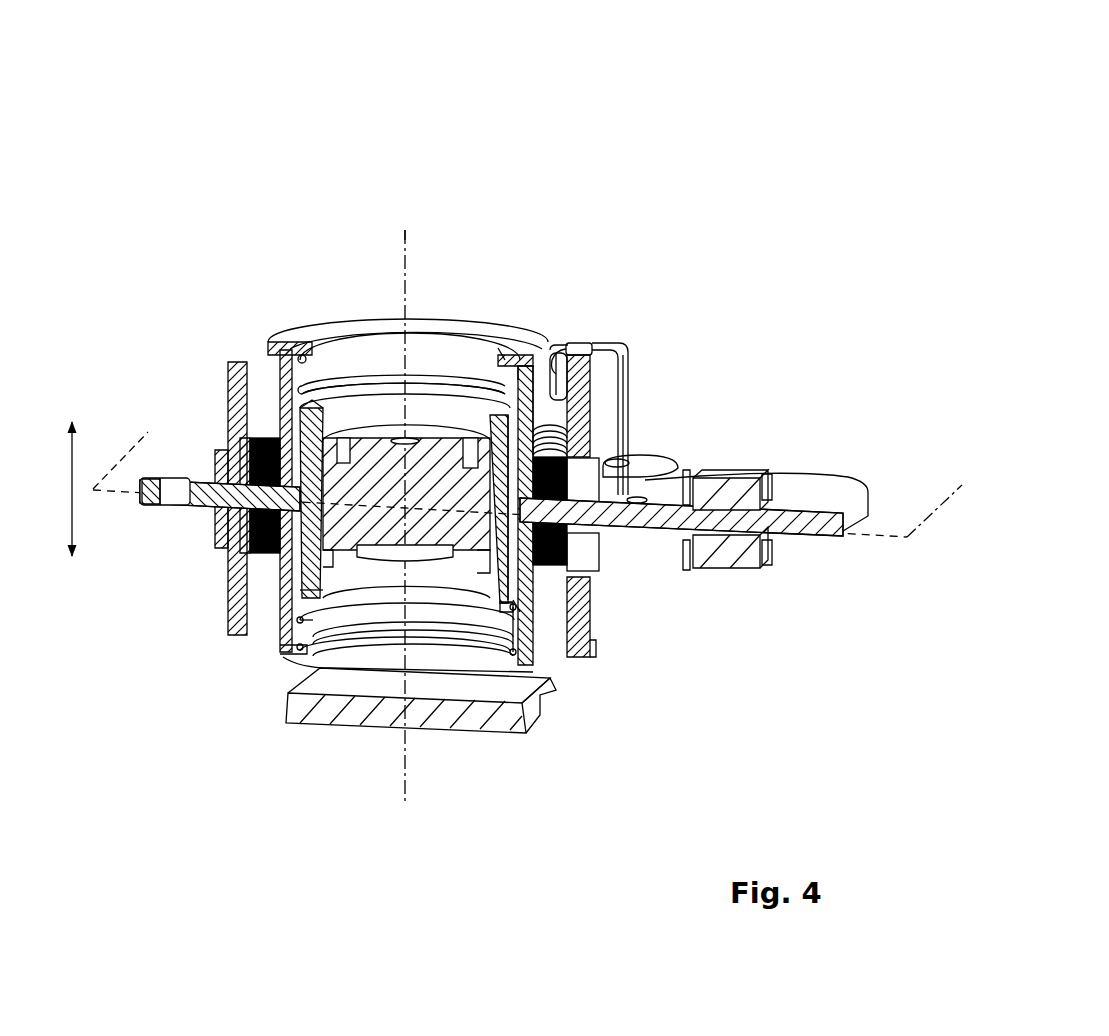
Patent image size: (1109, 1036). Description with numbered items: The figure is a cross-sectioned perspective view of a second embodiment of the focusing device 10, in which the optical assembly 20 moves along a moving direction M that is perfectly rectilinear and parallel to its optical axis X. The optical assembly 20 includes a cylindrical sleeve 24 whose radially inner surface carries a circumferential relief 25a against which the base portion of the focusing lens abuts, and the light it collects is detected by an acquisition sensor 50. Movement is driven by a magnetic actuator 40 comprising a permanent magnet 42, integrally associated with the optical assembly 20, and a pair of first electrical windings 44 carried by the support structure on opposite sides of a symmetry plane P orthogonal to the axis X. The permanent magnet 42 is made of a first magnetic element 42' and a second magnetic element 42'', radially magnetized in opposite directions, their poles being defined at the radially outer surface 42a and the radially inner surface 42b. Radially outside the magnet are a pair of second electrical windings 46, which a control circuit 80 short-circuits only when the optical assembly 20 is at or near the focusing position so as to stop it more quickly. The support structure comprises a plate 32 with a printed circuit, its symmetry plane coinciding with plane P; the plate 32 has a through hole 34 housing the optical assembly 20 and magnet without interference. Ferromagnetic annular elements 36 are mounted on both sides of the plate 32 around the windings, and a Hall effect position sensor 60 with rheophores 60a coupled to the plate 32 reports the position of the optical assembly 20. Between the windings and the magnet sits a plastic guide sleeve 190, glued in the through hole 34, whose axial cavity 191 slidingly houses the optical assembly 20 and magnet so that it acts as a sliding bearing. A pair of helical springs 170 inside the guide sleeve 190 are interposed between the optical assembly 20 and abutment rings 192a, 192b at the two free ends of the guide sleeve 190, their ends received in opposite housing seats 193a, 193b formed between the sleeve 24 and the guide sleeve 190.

The focusing device 10 is at (244, 136).
The optical assembly 20 is at (355, 382).
The sleeve 24 is at (377, 605).
The circumferential relief 25a is at (322, 663).
The plate 32 is at (845, 519).
The through hole 34 is at (575, 520).
The annular element 36 is at (227, 425).
The magnetic actuator 40 is at (268, 575).
The permanent magnet 42 is at (246, 472).
The first magnetic element 42' is at (220, 329).
The second magnetic element 42'' is at (185, 632).
The radially outer surface of the magnetic element 42a is at (550, 450).
The radially inner surface of the magnetic element 42b is at (530, 575).
The first electrical winding 44 is at (542, 348).
The second electrical winding 46 is at (240, 523).
The acquisition sensor 50 is at (307, 707).
The position sensor 60 is at (625, 343).
The rheophore 60a is at (597, 345).
The control circuit 80 is at (726, 478).
The helical spring 170 is at (478, 362).
The guide sleeve 190 is at (522, 612).
The axial cavity 191 is at (458, 365).
The abutment ring 192a is at (520, 625).
The abutment ring 192b is at (522, 360).
The housing seat 193a is at (520, 640).
The housing seat 193b is at (503, 352).
The optical axis X is at (406, 262).
The moving direction M is at (56, 489).
The symmetry plane P is at (138, 460).